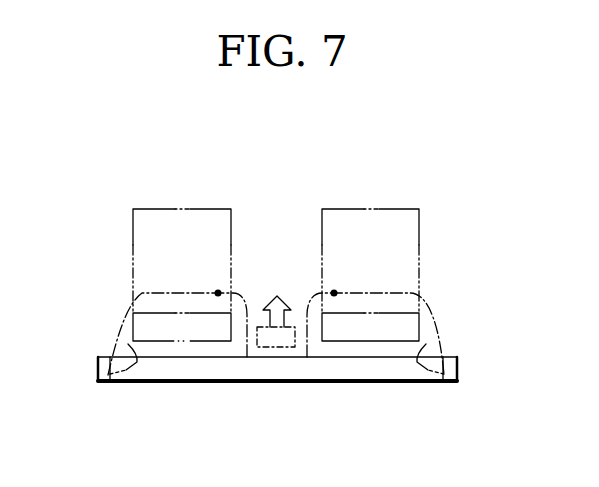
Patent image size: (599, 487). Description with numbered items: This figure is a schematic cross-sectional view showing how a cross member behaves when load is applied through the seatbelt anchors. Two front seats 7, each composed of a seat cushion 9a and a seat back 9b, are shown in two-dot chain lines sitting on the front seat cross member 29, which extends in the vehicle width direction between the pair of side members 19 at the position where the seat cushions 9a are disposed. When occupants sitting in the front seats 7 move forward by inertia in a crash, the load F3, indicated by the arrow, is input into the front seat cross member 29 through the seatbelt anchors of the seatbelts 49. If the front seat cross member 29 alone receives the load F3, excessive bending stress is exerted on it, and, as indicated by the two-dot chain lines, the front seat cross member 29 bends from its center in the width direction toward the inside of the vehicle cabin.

The front seat 7 is at (141, 192).
The seat cushion 9a is at (193, 345).
The seat back 9b is at (196, 207).
The side member 19 is at (98, 367).
The front seat cross member 29 is at (126, 372).
The seatbelt 49 is at (212, 289).
The load F3 is at (276, 308).